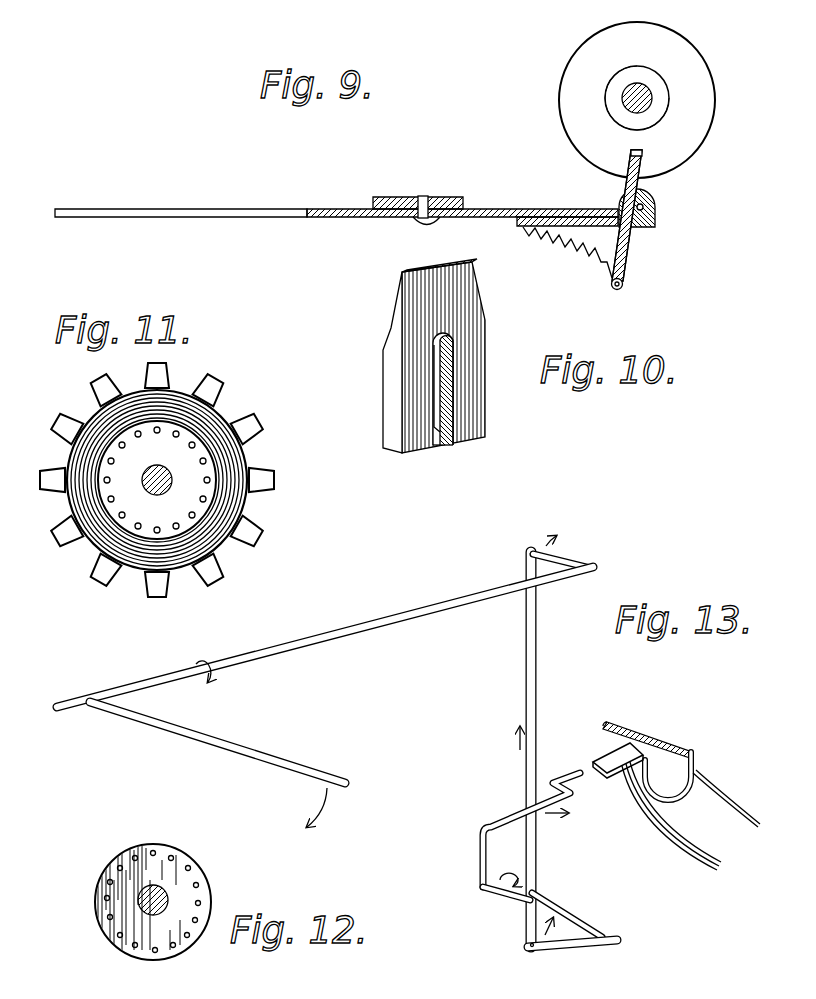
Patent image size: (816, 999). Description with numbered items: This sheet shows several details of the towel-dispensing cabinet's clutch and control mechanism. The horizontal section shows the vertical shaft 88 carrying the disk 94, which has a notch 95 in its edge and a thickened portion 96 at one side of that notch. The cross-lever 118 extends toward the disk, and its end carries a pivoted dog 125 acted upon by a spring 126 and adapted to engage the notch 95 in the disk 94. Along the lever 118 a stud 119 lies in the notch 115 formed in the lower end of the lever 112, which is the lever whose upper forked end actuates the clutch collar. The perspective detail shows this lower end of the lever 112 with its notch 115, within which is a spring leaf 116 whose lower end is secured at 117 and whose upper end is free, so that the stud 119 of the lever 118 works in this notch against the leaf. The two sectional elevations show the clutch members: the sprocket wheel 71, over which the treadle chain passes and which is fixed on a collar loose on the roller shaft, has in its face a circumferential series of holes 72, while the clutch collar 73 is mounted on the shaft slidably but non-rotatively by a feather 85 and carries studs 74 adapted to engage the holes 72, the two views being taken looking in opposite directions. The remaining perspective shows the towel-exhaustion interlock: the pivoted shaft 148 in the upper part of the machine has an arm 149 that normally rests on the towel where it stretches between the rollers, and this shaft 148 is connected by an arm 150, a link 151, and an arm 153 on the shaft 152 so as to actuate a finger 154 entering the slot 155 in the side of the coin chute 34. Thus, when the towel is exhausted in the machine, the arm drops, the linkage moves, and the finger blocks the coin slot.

In FIG. 9, the disk 94 is at (637, 100).
In FIG. 9, the vertical shaft 88 is at (652, 96).
In FIG. 9, the lever 118 is at (237, 210).
In FIG. 9, the lever 112 is at (447, 197).
In FIG. 10, the lever 112 is at (417, 302).
In FIG. 9, the stud 119 is at (422, 196).
In FIG. 9, the pivoted dog 125 is at (623, 247).
In FIG. 9, the spring 126 is at (565, 248).
In FIG. 9, the notch 95 is at (644, 152).
In FIG. 9, the thickened portion 96 is at (648, 177).
In FIG. 10, the spring leaf 116 is at (437, 383).
In FIG. 10, the securing point 117 is at (430, 412).
In FIG. 10, the notch 115 is at (431, 446).
In FIG. 11, the sprocket wheel 71 is at (233, 497).
In FIG. 11, the holes 72 is at (201, 458).
In FIG. 12, the clutch collar 73 is at (208, 893).
In FIG. 12, the studs 74 is at (188, 863).
In FIG. 12, the feather 85 is at (153, 886).
In FIG. 13, the pivoted shaft 148 is at (342, 630).
In FIG. 13, the arm 149 is at (287, 760).
In FIG. 13, the arm 150 is at (560, 557).
In FIG. 13, the link 151 is at (538, 681).
In FIG. 13, the shaft 152 is at (553, 910).
In FIG. 13, the arm 153 is at (565, 942).
In FIG. 13, the finger 154 is at (565, 766).
In FIG. 13, the slot 155 is at (615, 774).
In FIG. 13, the coin chute 34 is at (713, 803).